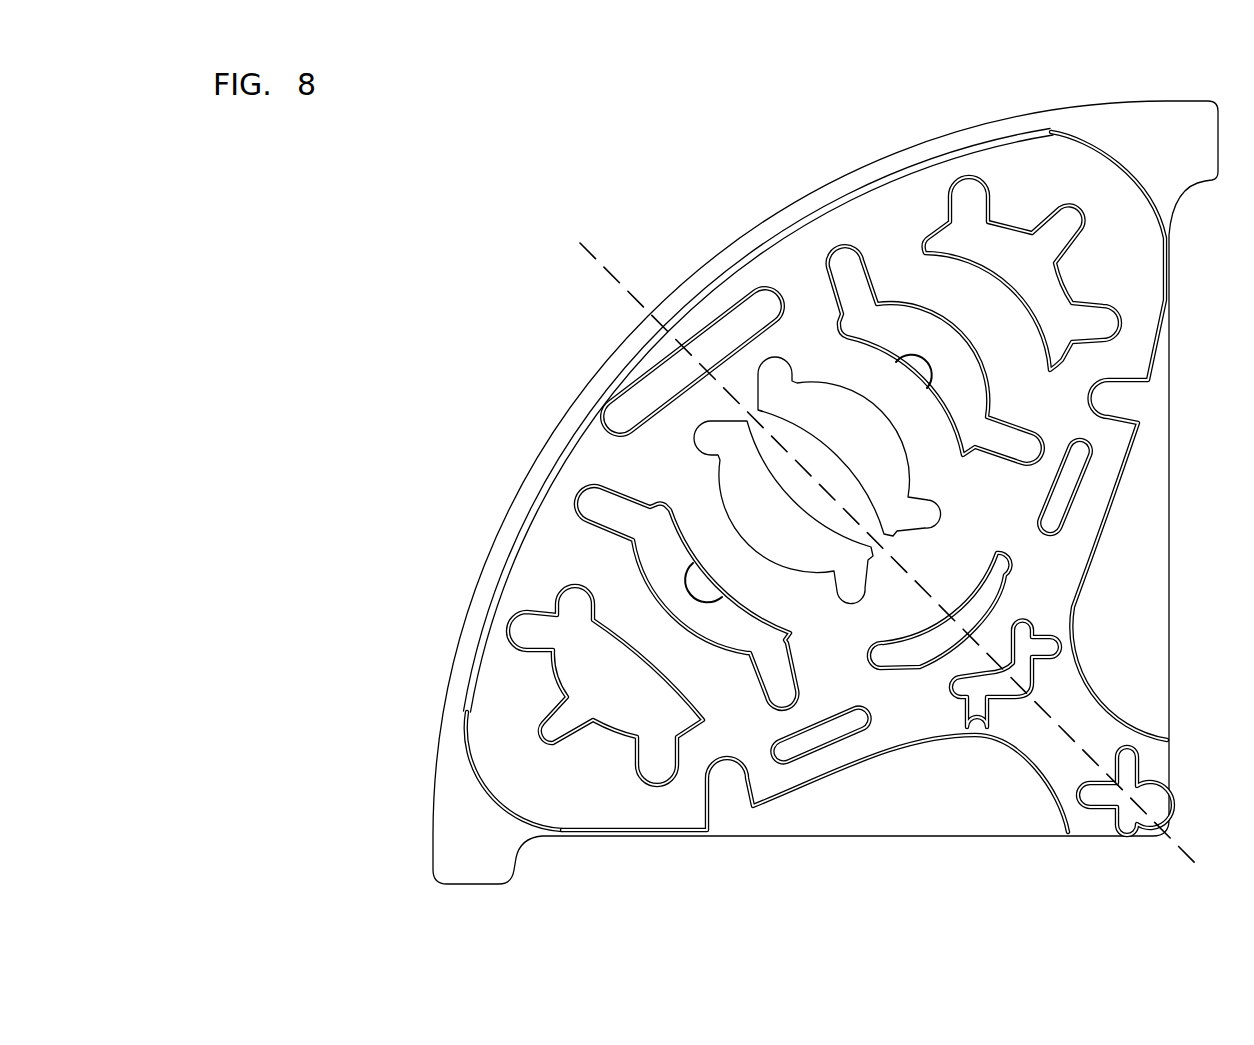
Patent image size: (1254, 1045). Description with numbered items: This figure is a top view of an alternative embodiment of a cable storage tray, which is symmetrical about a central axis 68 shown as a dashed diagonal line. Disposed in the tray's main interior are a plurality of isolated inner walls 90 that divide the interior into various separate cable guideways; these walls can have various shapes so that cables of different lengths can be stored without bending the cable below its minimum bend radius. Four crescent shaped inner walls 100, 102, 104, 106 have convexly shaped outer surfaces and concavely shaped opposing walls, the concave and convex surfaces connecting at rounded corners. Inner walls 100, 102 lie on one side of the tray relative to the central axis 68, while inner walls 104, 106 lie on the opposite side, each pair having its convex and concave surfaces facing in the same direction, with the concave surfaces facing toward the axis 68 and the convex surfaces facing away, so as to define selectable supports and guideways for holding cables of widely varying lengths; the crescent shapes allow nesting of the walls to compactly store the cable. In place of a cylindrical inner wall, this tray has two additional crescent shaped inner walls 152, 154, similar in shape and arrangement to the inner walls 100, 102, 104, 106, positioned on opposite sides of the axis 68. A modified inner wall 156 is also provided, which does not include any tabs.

The central axis 68 is at (600, 270).
The inner walls 90 is at (976, 259).
The crescent shaped inner wall 100 is at (621, 705).
The crescent shaped inner wall 102 is at (712, 628).
The crescent shaped inner wall 104 is at (965, 394).
The crescent shaped inner wall 106 is at (1050, 290).
The crescent shaped inner wall 152 is at (805, 560).
The crescent shaped inner wall 154 is at (893, 473).
The modified inner wall 156 is at (527, 415).